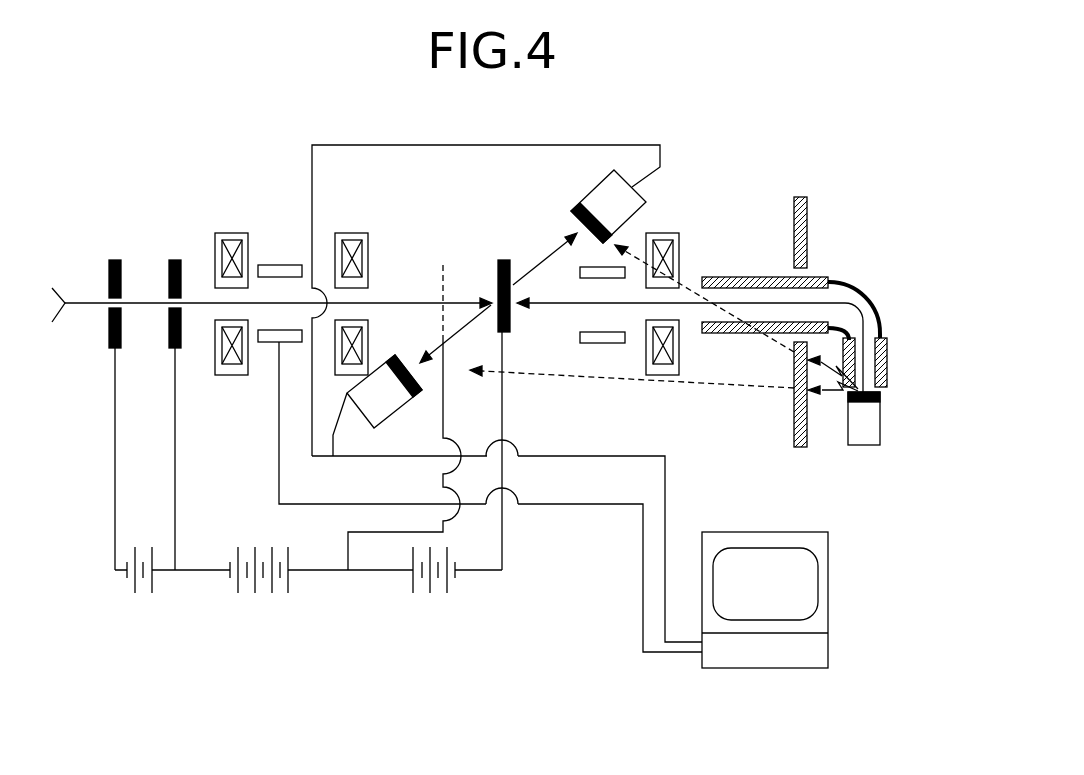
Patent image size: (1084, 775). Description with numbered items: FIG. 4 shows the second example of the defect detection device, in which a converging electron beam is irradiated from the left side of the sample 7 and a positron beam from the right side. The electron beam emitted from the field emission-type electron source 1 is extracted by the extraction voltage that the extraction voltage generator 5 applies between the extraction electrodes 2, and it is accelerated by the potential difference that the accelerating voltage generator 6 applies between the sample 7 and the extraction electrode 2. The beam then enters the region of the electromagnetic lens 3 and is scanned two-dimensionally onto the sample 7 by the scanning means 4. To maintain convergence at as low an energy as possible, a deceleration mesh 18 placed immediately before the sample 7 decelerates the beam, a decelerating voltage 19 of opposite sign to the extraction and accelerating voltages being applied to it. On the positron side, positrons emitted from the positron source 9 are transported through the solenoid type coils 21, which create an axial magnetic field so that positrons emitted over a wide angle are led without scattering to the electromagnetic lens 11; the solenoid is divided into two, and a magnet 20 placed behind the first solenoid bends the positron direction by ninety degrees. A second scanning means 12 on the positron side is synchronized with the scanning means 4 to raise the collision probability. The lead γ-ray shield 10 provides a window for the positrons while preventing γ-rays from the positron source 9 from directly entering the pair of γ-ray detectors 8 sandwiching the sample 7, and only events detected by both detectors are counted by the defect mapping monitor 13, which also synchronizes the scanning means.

The electron source 1 is at (57, 285).
The extraction electrodes 2 is at (176, 260).
The electromagnetic lens 3 is at (229, 233).
The scanning means 4 is at (281, 265).
The extraction voltage generator 5 is at (139, 593).
The accelerating voltage generator 6 is at (259, 593).
The sample 7 is at (502, 398).
The γ-ray detectors 8 is at (496, 300).
The positron source 9 is at (844, 419).
The γ-ray shield 10 is at (807, 301).
The electromagnetic lens 11 is at (661, 233).
The second scanning means 12 is at (585, 343).
The defect mapping monitor 13 is at (792, 600).
The deceleration mesh 18 is at (404, 398).
The decelerating voltage 19 is at (434, 593).
The magnet 20 is at (870, 297).
The solenoid type coil 21 is at (822, 277).